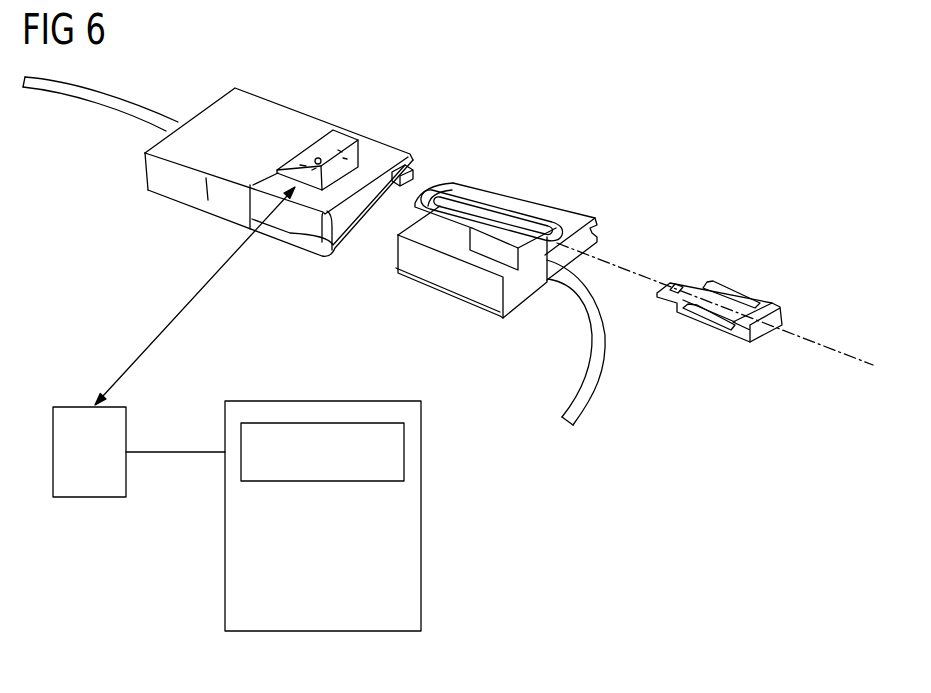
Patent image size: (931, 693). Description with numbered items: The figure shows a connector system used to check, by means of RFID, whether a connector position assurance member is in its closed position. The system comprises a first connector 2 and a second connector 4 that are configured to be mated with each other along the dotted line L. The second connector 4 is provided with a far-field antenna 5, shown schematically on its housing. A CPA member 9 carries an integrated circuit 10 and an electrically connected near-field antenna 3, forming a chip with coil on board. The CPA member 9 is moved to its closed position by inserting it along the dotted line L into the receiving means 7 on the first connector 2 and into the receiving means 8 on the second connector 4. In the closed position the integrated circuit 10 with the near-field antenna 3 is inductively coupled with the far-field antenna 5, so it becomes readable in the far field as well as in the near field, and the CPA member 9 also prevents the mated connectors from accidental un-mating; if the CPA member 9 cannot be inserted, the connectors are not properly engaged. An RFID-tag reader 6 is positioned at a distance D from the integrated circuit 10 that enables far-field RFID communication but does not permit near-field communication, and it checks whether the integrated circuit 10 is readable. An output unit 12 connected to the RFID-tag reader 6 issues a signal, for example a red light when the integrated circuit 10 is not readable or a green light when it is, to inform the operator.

The first connector 2 is at (492, 278).
The near-field antenna 3 is at (719, 267).
The second connector 4 is at (218, 159).
The far-field antenna 5 is at (316, 157).
The RFID-tag reader 6 is at (89, 498).
The receiving means 7 is at (531, 199).
The receiving means 8 is at (357, 121).
The CPA member 9 is at (757, 280).
The integrated circuit 10 is at (684, 266).
The output unit 12 is at (322, 401).
The distance D is at (195, 297).
The dotted line L is at (818, 343).